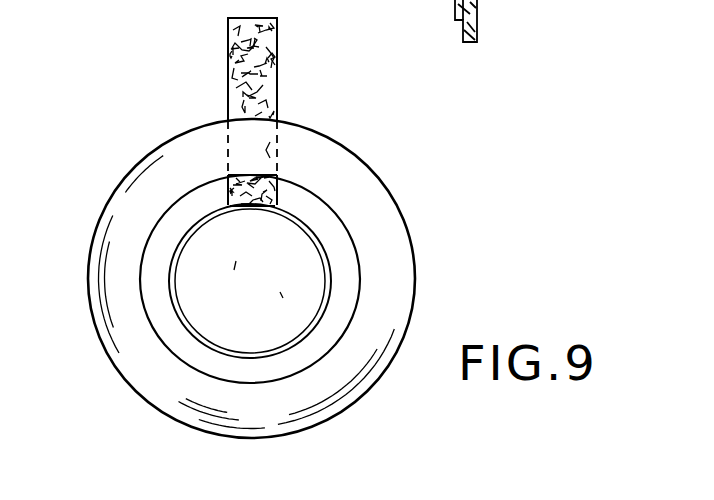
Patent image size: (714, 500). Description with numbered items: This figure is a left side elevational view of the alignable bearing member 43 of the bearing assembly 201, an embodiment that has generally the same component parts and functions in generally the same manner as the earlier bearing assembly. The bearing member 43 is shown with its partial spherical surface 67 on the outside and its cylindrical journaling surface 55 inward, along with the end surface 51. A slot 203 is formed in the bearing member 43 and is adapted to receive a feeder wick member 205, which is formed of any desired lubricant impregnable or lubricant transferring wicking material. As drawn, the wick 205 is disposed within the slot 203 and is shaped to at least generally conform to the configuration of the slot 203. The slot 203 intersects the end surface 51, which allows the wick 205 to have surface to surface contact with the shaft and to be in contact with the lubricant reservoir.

The bearing assembly 201 is at (418, 286).
The partial spherical surface 67 is at (342, 140).
The bearing member 43 is at (92, 323).
The end surface 51 is at (330, 236).
The cylindrical journaling surface 55 is at (324, 300).
The feeder wick member 205 is at (228, 50).
The slot 203 is at (272, 140).